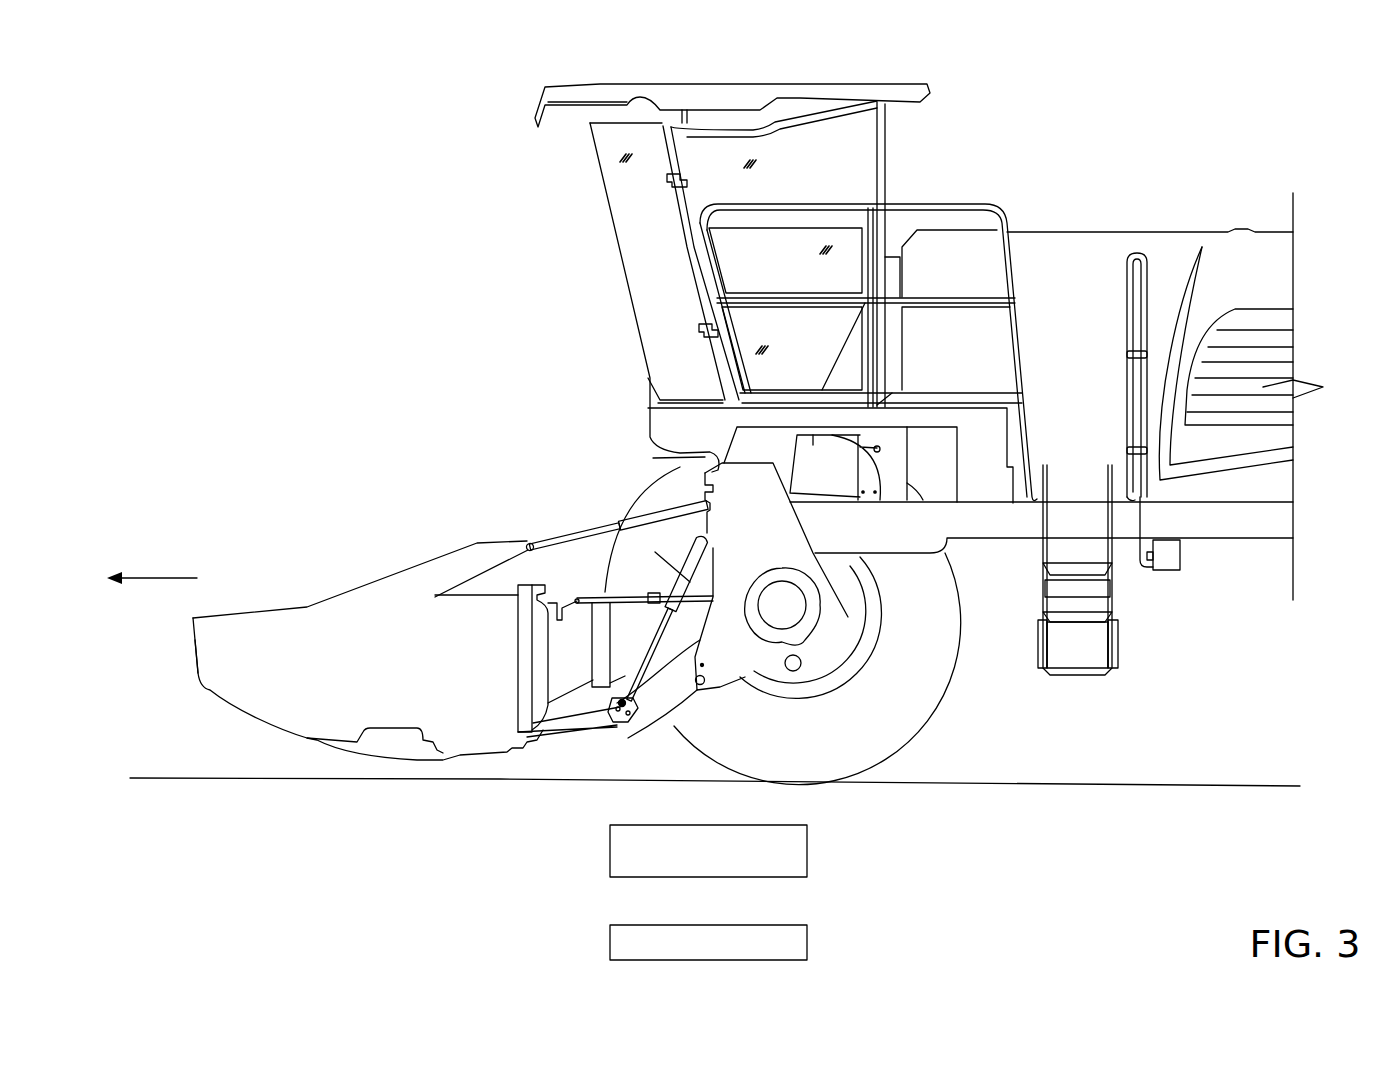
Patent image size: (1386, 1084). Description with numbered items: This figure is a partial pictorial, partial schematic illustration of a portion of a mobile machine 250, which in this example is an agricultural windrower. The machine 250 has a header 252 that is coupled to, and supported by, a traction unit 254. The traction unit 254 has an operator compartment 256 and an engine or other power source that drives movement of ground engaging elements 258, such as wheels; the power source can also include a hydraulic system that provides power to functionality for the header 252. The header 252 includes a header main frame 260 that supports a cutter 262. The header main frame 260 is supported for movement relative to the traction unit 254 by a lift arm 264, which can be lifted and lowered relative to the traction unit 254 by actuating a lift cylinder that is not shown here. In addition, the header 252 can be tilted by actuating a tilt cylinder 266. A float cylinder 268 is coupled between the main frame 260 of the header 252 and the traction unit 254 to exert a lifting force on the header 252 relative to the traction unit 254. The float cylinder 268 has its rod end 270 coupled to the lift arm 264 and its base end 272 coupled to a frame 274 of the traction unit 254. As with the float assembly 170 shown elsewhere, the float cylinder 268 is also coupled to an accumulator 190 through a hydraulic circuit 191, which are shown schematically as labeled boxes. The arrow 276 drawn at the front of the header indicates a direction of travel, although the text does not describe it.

The float assembly 170 is at (492, 789).
The accumulator 190 is at (708, 923).
The hydraulic circuit 191 is at (683, 622).
The mobile machine 250 is at (1068, 88).
The header 252 is at (331, 677).
The traction unit 254 is at (1030, 200).
The operator compartment 256 is at (862, 84).
The ground engaging elements 258 is at (920, 730).
The header main frame 260 is at (197, 652).
The cutter 262 is at (393, 757).
The lift arm 264 is at (630, 730).
The tilt cylinder 266 is at (580, 528).
The float cylinder 268 is at (697, 607).
The rod end 270 is at (614, 703).
The base end 272 is at (683, 567).
The frame 274 is at (745, 532).
The forward direction of travel 276 is at (152, 571).